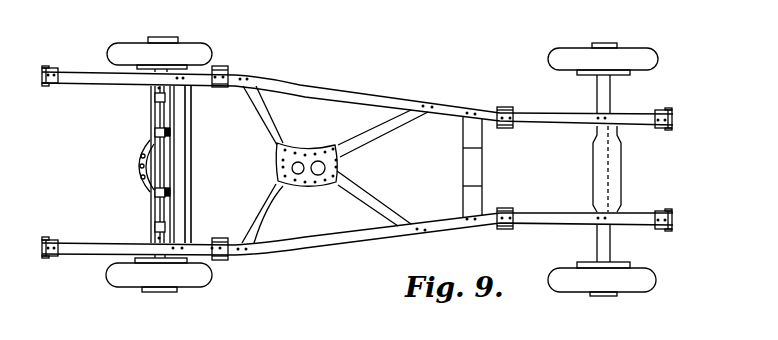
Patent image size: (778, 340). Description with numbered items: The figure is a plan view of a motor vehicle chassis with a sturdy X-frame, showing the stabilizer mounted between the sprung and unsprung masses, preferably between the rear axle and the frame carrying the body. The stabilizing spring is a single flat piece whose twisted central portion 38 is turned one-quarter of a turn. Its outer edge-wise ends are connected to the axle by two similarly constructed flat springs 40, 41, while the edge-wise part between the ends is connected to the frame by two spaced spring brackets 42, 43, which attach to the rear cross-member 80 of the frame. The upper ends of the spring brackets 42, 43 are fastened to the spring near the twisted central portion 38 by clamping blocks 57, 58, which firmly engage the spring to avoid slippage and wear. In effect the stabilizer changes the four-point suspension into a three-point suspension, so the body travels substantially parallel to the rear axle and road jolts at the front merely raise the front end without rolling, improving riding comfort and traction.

The twisted central portion 38 is at (148, 143).
The flat spring 40 is at (155, 97).
The flat spring 41 is at (155, 227).
The spring bracket 42 is at (171, 131).
The spring bracket 43 is at (171, 192).
The clamping block 57 is at (155, 132).
The clamping block 58 is at (155, 193).
The rear cross-member 80 is at (187, 160).